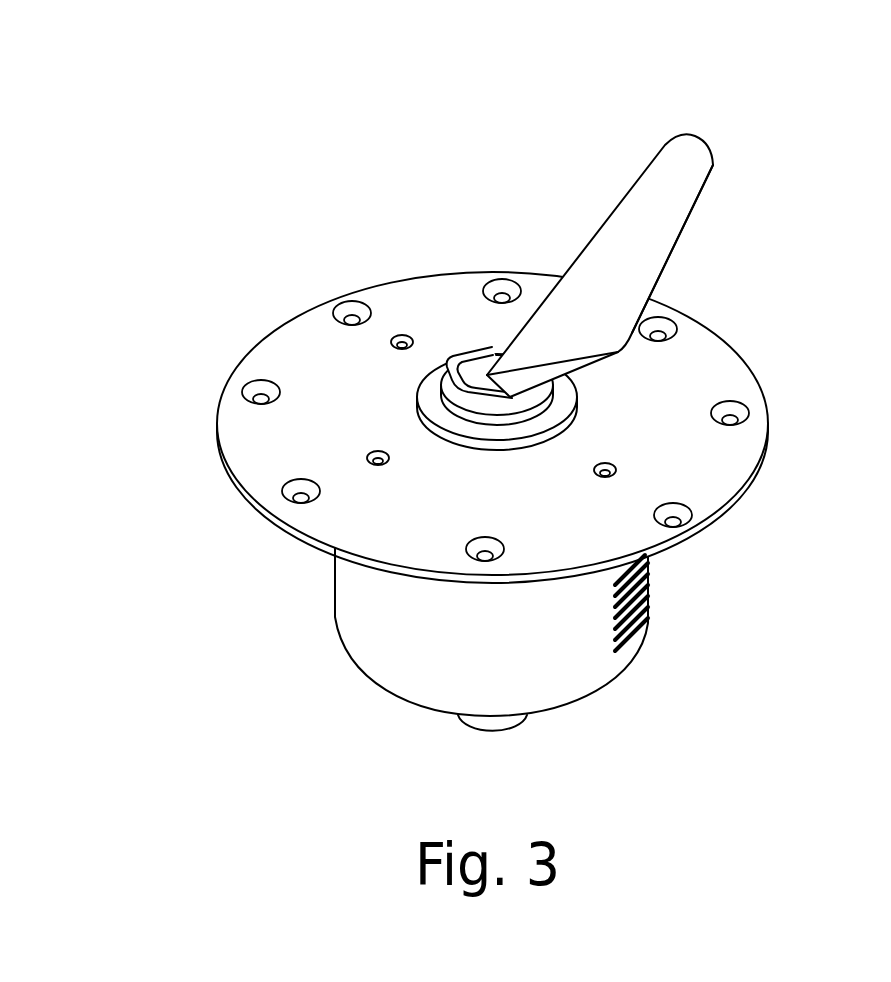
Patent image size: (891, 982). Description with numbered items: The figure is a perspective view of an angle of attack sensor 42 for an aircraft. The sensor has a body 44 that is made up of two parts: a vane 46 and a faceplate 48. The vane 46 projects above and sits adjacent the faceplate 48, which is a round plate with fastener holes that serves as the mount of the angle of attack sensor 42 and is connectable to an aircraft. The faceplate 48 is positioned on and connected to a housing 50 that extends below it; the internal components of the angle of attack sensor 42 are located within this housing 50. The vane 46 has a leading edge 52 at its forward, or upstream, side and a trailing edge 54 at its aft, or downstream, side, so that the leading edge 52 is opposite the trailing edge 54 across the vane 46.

The angle of attack sensor 42 is at (435, 377).
The body 44 is at (435, 357).
The vane 46 is at (626, 264).
The faceplate 48 is at (258, 448).
The housing 50 is at (363, 602).
The leading edge 52 is at (557, 264).
The trailing edge 54 is at (669, 253).